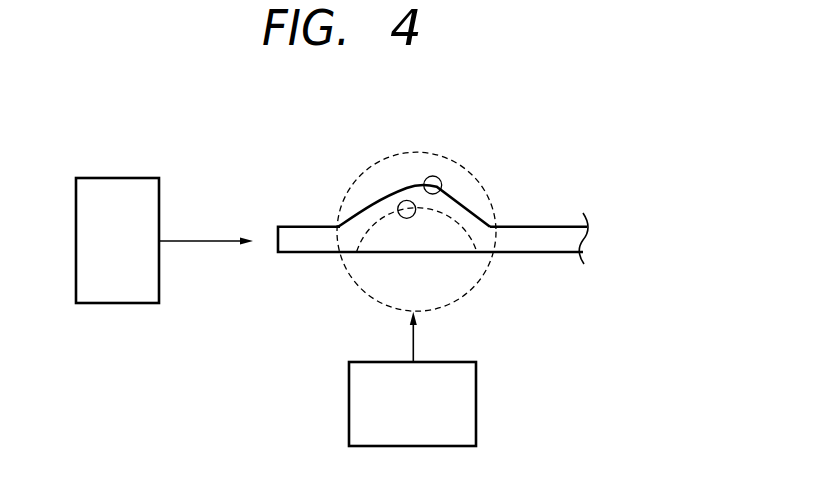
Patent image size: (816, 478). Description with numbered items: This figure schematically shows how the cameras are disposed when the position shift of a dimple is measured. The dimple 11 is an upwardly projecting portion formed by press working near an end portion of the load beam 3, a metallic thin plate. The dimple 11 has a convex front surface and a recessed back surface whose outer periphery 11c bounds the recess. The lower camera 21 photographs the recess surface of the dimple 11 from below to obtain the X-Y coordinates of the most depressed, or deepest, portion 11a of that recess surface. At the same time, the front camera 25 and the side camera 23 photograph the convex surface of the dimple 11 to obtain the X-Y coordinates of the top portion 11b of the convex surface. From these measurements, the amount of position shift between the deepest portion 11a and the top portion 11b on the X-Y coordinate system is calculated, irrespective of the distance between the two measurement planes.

The load beam 3 is at (558, 236).
The dimple 11 is at (466, 197).
The deepest portion 11a is at (401, 201).
The top portion 11b is at (433, 176).
The outer periphery 11c is at (483, 266).
The lower camera 21 is at (465, 400).
The side camera 23 is at (403, 151).
The front camera 25 is at (111, 192).